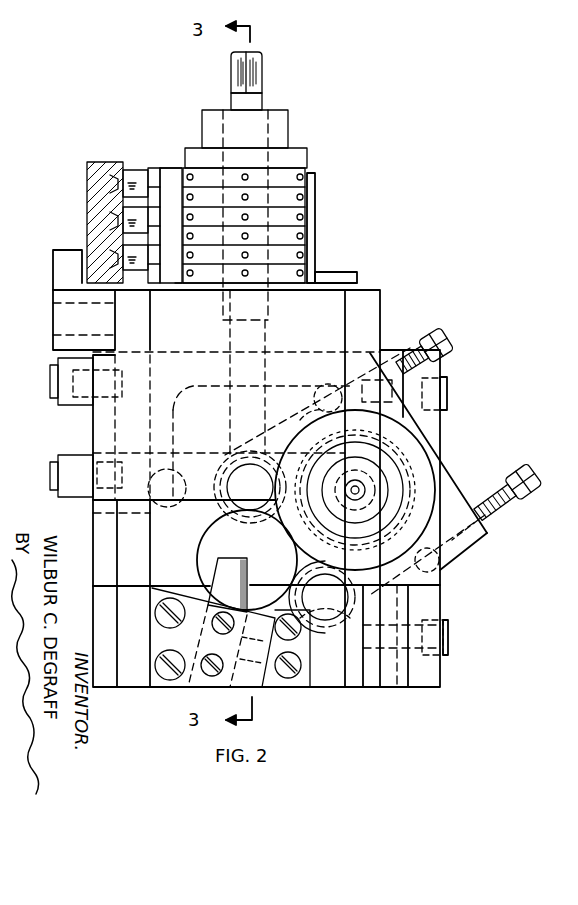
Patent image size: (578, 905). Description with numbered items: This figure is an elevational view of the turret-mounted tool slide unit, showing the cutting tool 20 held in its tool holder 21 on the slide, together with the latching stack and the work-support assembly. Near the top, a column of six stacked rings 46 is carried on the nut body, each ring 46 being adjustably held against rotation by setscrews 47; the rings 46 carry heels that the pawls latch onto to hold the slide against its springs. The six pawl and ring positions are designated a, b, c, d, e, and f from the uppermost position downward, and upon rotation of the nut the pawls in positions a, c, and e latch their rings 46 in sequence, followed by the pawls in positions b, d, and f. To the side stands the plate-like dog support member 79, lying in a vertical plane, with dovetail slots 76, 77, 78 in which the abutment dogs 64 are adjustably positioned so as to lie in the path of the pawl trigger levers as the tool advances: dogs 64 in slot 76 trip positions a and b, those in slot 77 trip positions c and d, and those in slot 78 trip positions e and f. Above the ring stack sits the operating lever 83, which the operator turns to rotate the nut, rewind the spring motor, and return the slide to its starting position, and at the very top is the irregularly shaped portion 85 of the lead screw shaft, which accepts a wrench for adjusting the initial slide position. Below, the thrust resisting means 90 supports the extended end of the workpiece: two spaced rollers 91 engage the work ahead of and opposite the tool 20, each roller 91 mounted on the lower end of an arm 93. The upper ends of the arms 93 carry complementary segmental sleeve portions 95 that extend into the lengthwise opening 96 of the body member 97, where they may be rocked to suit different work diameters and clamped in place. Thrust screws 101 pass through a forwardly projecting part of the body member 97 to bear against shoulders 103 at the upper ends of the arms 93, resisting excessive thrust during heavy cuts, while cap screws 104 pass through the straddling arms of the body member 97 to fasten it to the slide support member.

The turning or cutting tool 20 is at (227, 575).
The tool holder 21 is at (185, 681).
The stacked rings 46 is at (307, 163).
The setscrews 47 is at (268, 172).
The abutment members or dogs 64 is at (133, 170).
The dovetail guideway or slot 76 is at (117, 186).
The dovetail guideway or slot 77 is at (117, 220).
The dovetail guideway or slot 78 is at (117, 258).
The dog support member 79 is at (100, 165).
The operating lever 83 is at (288, 132).
The irregularly shaped portion 85 is at (265, 78).
The thrust resisting means 90 is at (450, 482).
The rollers 91 is at (228, 454).
The arms 93 is at (291, 424).
The segmental sleeve portions 95 is at (437, 450).
The lengthwise opening 96 is at (338, 547).
The body member 97 is at (473, 546).
The thrust screws 101 is at (455, 347).
The shoulders 103 is at (328, 392).
The cap screws 104 is at (50, 388).
The pawl position a is at (158, 170).
The pawl position b is at (161, 185).
The pawl position c is at (160, 205).
The pawl position d is at (161, 225).
The pawl position e is at (161, 245).
The pawl position f is at (160, 266).